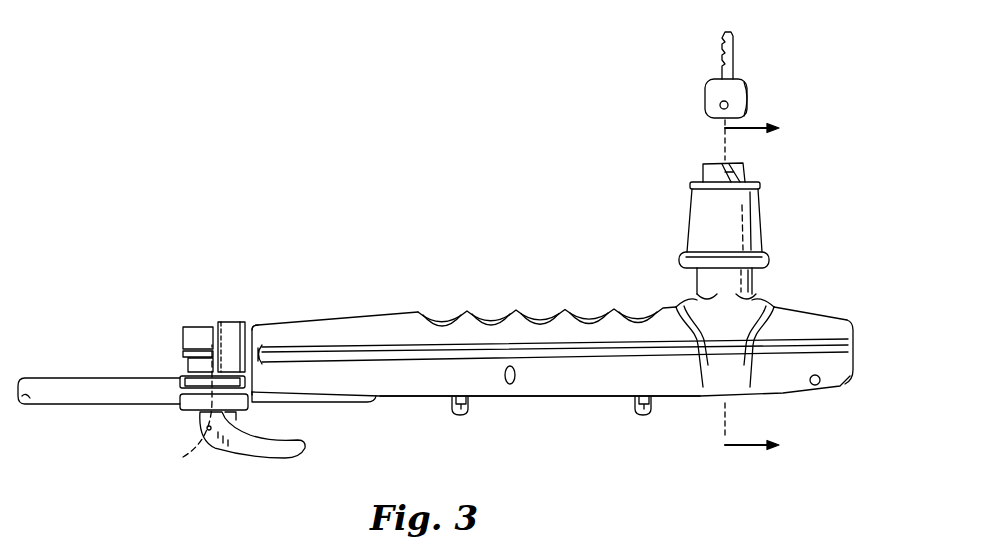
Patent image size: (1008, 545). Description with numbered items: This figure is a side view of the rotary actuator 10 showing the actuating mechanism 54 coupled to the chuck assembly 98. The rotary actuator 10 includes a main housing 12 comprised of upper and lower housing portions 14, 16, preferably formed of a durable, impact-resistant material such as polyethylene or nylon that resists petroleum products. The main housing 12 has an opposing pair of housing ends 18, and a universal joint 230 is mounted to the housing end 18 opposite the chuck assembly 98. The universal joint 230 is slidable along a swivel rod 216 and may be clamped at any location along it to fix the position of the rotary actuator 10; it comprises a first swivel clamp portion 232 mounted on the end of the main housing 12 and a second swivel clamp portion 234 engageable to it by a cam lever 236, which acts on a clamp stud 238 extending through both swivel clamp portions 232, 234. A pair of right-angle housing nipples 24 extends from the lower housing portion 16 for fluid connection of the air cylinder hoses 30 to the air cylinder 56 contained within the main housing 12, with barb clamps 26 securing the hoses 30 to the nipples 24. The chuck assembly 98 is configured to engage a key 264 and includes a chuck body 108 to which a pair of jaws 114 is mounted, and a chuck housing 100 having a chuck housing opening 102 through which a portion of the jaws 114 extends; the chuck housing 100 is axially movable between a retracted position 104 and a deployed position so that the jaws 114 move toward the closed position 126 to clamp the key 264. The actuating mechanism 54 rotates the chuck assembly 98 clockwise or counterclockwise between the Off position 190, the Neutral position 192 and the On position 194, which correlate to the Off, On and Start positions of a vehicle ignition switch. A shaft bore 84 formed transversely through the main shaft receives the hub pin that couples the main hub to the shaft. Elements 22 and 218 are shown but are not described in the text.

The rotary actuator 10 is at (226, 200).
The main housing 12 is at (283, 318).
The upper housing portion 14 is at (338, 322).
The lower housing portion 16 is at (337, 383).
The housing ends 18 is at (268, 323).
The lock boss 22 is at (760, 300).
The housing nipples 24 is at (452, 401).
The barb clamps 26 is at (468, 405).
The air cylinder hoses 30 is at (460, 414).
The actuating mechanism 54 is at (600, 415).
The air cylinder 56 is at (552, 383).
The shaft bore 84 is at (700, 300).
The chuck assembly 98 is at (668, 218).
The chuck housing 100 is at (776, 220).
The chuck housing opening 102 is at (758, 183).
The retracted position 104 is at (762, 222).
The chuck body 108 is at (703, 277).
The jaws 114 is at (661, 162).
The closed position 126 is at (705, 163).
The Off position 190 is at (558, 537).
The Neutral position 192 is at (738, 528).
The On position 194 is at (800, 535).
The swivel rod 216 is at (52, 378).
The ledge 218 is at (373, 398).
The universal joint 230 is at (182, 397).
The first swivel clamp portion 232 is at (193, 378).
The second swivel clamp portion 234 is at (185, 362).
The cam lever 236 is at (257, 450).
The clamp stud 238 is at (189, 415).
The key 264 is at (732, 53).